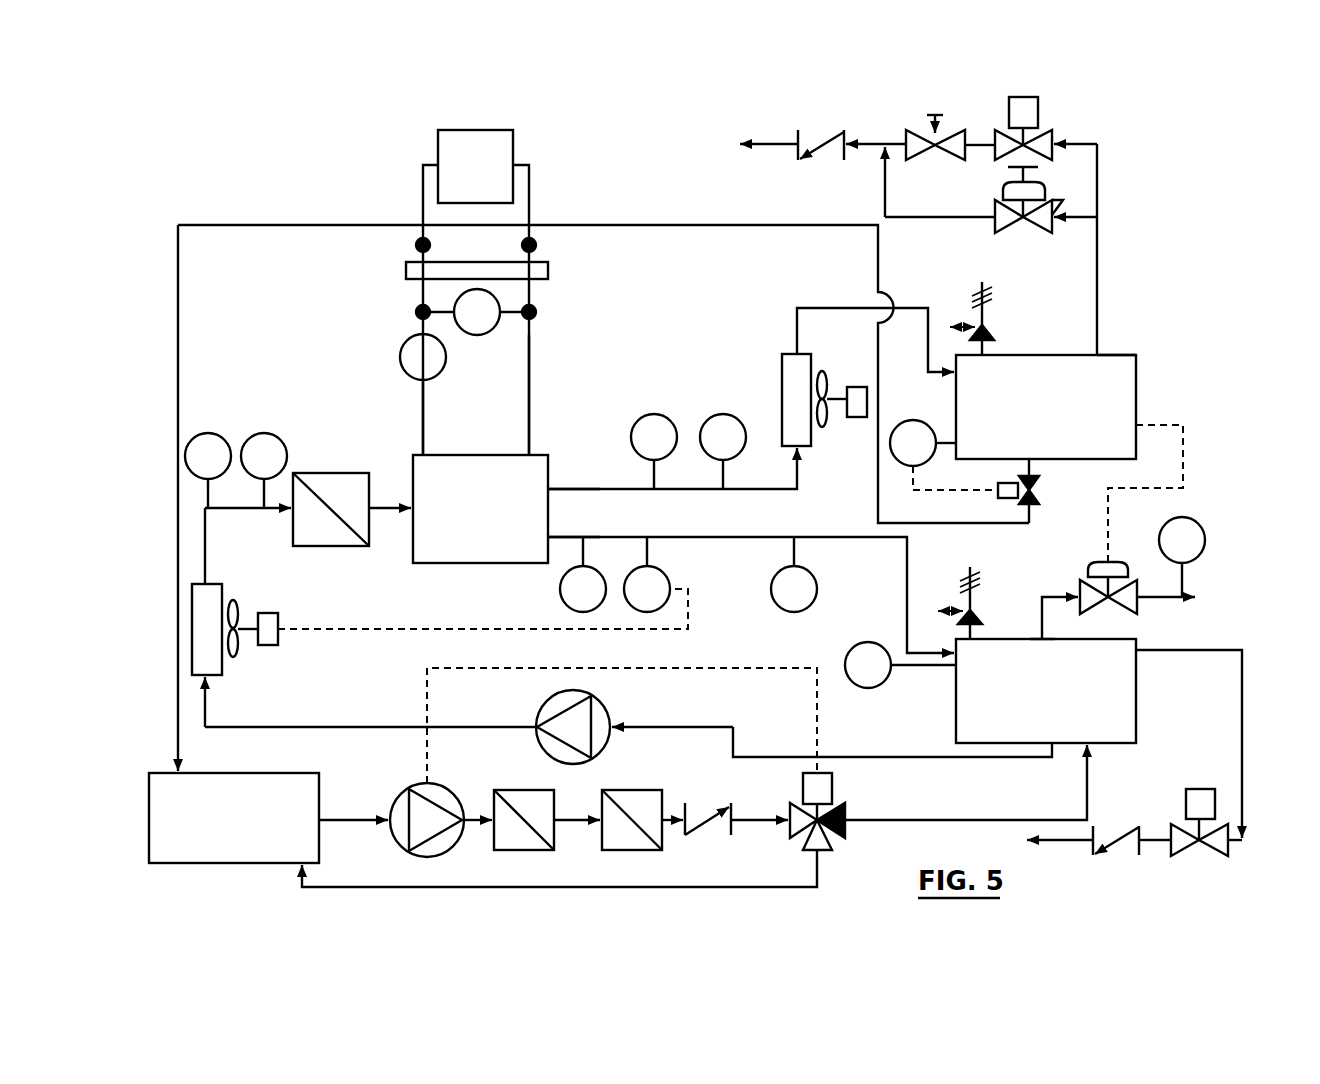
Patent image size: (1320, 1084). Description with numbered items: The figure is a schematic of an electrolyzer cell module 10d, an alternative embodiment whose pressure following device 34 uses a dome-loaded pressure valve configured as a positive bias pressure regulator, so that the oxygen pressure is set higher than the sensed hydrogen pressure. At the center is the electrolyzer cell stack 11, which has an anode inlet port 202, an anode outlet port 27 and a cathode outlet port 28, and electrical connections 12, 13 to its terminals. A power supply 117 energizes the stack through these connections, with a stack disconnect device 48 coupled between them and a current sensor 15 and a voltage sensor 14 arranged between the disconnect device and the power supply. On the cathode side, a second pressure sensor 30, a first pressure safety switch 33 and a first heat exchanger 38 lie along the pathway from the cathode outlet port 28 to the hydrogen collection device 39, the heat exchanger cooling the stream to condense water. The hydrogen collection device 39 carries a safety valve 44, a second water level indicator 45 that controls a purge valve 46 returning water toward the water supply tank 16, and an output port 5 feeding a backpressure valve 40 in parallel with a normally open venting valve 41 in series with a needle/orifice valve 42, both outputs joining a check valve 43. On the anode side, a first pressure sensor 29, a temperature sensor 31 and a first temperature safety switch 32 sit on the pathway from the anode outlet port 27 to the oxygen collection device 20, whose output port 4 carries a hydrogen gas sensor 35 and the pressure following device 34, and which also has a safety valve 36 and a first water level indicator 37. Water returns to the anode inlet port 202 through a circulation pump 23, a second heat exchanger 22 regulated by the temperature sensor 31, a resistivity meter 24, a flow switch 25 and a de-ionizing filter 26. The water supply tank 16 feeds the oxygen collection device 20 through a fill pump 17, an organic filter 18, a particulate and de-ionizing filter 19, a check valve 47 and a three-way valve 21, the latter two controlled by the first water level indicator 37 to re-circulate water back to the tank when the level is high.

The electrolyzer cell module 10d is at (352, 147).
The power supply 117 is at (458, 182).
The stack disconnect device 48 is at (550, 270).
The voltage sensor 14 is at (480, 335).
The current sensor 15 is at (408, 340).
The electrical connection 12 is at (421, 428).
The electrical connection 13 is at (531, 428).
The electrolyzer cell stack 11 is at (492, 548).
The anode inlet port 202 is at (413, 512).
The resistivity meter 24 is at (212, 440).
The flow switch 25 is at (276, 440).
The de-ionizing filter 26 is at (334, 478).
The second heat exchanger 22 is at (223, 670).
The circulation pump 23 is at (550, 703).
The water supply tank 16 is at (246, 859).
The fill pump 17 is at (414, 852).
The organic filter 18 is at (516, 850).
The particulate and de-ionizing filter 19 is at (620, 850).
The check valve 47 is at (708, 812).
The three-way valve 21 is at (843, 836).
The cathode outlet port 28 is at (548, 489).
The anode outlet port 27 is at (548, 537).
The second pressure sensor 30 is at (652, 415).
The first pressure safety switch 33 is at (722, 415).
The first heat exchanger 38 is at (782, 378).
The second water level indicator 45 is at (913, 422).
The first pressure sensor 29 is at (560, 589).
The temperature sensor 31 is at (665, 576).
The first temperature safety switch 32 is at (812, 580).
The hydrogen collection device 39 is at (1058, 444).
The output port 5 is at (1102, 352).
The safety valve 44 is at (990, 328).
The purge valve 46 is at (1040, 498).
The normally open venting valve 41 is at (1055, 128).
The needle/orifice valve 42 is at (922, 158).
The backpressure valve 40 is at (1035, 228).
The check valve 43 is at (821, 165).
The oxygen collection device 20 is at (1058, 728).
The output port 4 is at (1040, 636).
The safety valve 36 is at (977, 612).
The first water level indicator 37 is at (872, 688).
The pressure following device 34 is at (1126, 602).
The hydrogen gas sensor 35 is at (1161, 533).